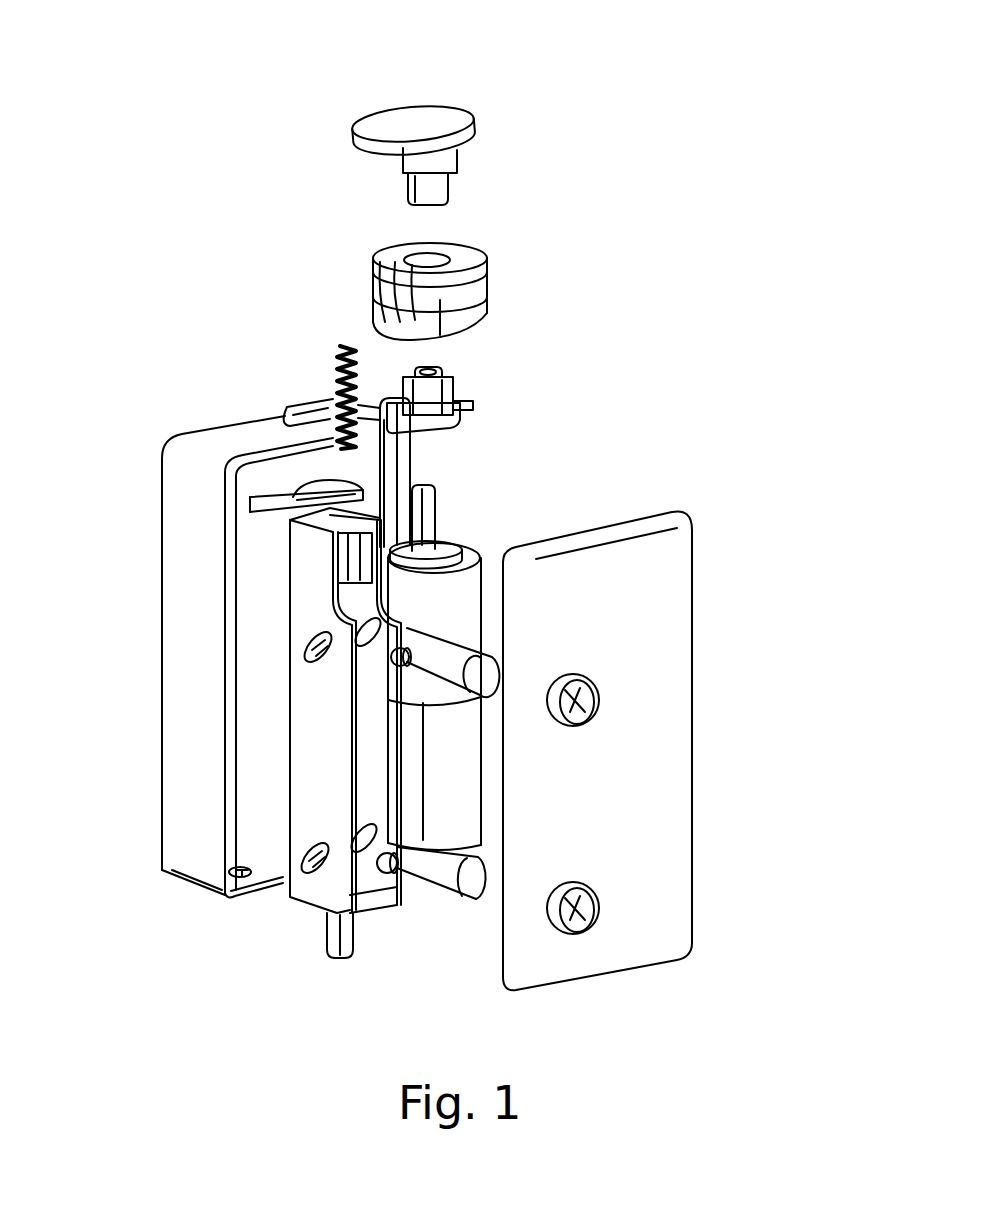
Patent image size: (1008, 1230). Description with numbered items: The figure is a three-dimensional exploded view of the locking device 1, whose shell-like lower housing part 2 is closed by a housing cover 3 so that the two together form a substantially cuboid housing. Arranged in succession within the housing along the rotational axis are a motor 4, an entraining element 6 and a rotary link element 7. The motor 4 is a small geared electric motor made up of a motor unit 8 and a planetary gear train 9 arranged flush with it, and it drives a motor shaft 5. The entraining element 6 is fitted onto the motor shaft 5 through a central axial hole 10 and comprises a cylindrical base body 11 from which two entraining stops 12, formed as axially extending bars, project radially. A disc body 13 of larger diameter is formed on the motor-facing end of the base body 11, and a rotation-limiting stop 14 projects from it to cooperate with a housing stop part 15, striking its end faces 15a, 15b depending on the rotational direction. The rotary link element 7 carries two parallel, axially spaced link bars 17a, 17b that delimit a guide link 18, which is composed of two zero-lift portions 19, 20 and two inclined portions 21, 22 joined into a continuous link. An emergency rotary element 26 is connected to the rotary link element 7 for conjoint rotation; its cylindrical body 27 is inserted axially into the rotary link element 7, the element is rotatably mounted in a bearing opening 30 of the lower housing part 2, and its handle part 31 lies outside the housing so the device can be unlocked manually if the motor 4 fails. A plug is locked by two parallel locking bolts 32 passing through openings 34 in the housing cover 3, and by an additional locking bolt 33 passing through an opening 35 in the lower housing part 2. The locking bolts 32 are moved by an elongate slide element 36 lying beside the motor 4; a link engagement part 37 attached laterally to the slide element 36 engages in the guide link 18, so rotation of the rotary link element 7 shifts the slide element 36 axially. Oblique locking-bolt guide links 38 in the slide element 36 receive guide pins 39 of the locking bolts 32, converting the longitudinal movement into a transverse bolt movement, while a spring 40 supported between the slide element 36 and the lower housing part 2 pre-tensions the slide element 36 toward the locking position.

The locking device 1 is at (673, 108).
The lower housing part 2 is at (256, 607).
The housing cover 3 is at (597, 776).
The motor 4 is at (457, 756).
The motor shaft 5 is at (440, 510).
The entraining element 6 is at (509, 421).
The rotary link element 7 is at (465, 302).
The motor unit 8 is at (452, 735).
The planetary gear train 9 is at (450, 608).
The central axial hole 10 is at (445, 375).
The cylindrical base body 11 is at (460, 402).
The entraining stops 12 is at (400, 397).
The disc body 13 is at (455, 425).
The rotation-limiting stop 14 is at (475, 408).
The housing stop part 15 is at (272, 437).
The end face 15a is at (358, 495).
The end face 15b is at (270, 512).
The link bar 17a is at (490, 268).
The link bar 17b is at (485, 302).
The guide link 18 is at (470, 288).
The zero-lift portion 19 is at (397, 246).
The zero-lift portion 20 is at (466, 246).
The inclined portion 21 is at (375, 288).
The inclined portion 22 is at (430, 246).
The emergency rotary element 26 is at (505, 125).
The cylindrical body 27 is at (447, 185).
The bearing opening 30 is at (330, 402).
The handle part 31 is at (388, 118).
The locking bolts 32 is at (455, 666).
The locking bolt 33 is at (347, 940).
The openings 34 is at (580, 700).
The opening 35 is at (250, 702).
The slide element 36 is at (312, 768).
The link engagement part 37 is at (406, 510).
The locking-bolt guide links 38 is at (305, 650).
The guide pins 39 is at (393, 664).
The spring 40 is at (340, 378).